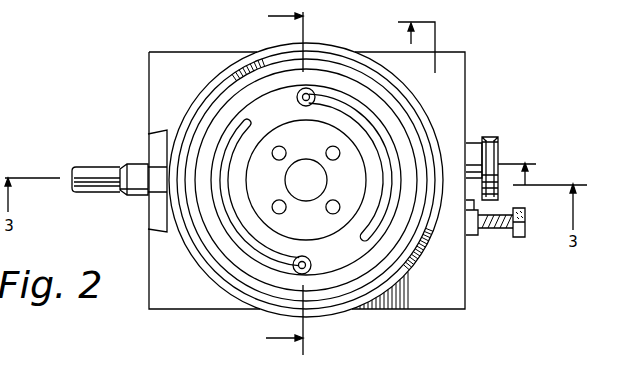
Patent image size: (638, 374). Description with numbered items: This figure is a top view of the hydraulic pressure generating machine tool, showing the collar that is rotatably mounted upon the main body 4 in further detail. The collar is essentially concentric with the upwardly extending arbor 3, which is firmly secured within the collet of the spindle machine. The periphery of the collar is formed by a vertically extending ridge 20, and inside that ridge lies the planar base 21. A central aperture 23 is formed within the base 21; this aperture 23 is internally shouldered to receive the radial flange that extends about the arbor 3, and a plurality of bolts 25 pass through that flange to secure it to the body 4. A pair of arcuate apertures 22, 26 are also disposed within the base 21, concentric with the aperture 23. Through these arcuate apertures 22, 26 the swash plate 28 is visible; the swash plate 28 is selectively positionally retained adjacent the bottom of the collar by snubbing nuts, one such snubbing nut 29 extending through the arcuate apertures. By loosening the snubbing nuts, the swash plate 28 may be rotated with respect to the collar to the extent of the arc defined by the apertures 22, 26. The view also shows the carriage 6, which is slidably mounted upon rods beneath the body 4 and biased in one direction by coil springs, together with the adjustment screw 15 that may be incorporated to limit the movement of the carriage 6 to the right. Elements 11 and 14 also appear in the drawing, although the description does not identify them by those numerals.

The arbor 3 is at (320, 164).
The tube fitting 11 is at (100, 166).
The bracket 14 is at (470, 237).
The adjustment screw 15 is at (519, 238).
The ridge 20 is at (399, 279).
The planar base 21 is at (337, 288).
The arcuate aperture 22 is at (222, 140).
The aperture 23 is at (290, 128).
The bolts 25 is at (281, 160).
The arcuate aperture 26 is at (383, 130).
The swash plate 28 is at (347, 107).
The snubbing nut 29 is at (311, 265).
The main body 4 is at (277, 181).
The carriage 6 is at (467, 95).